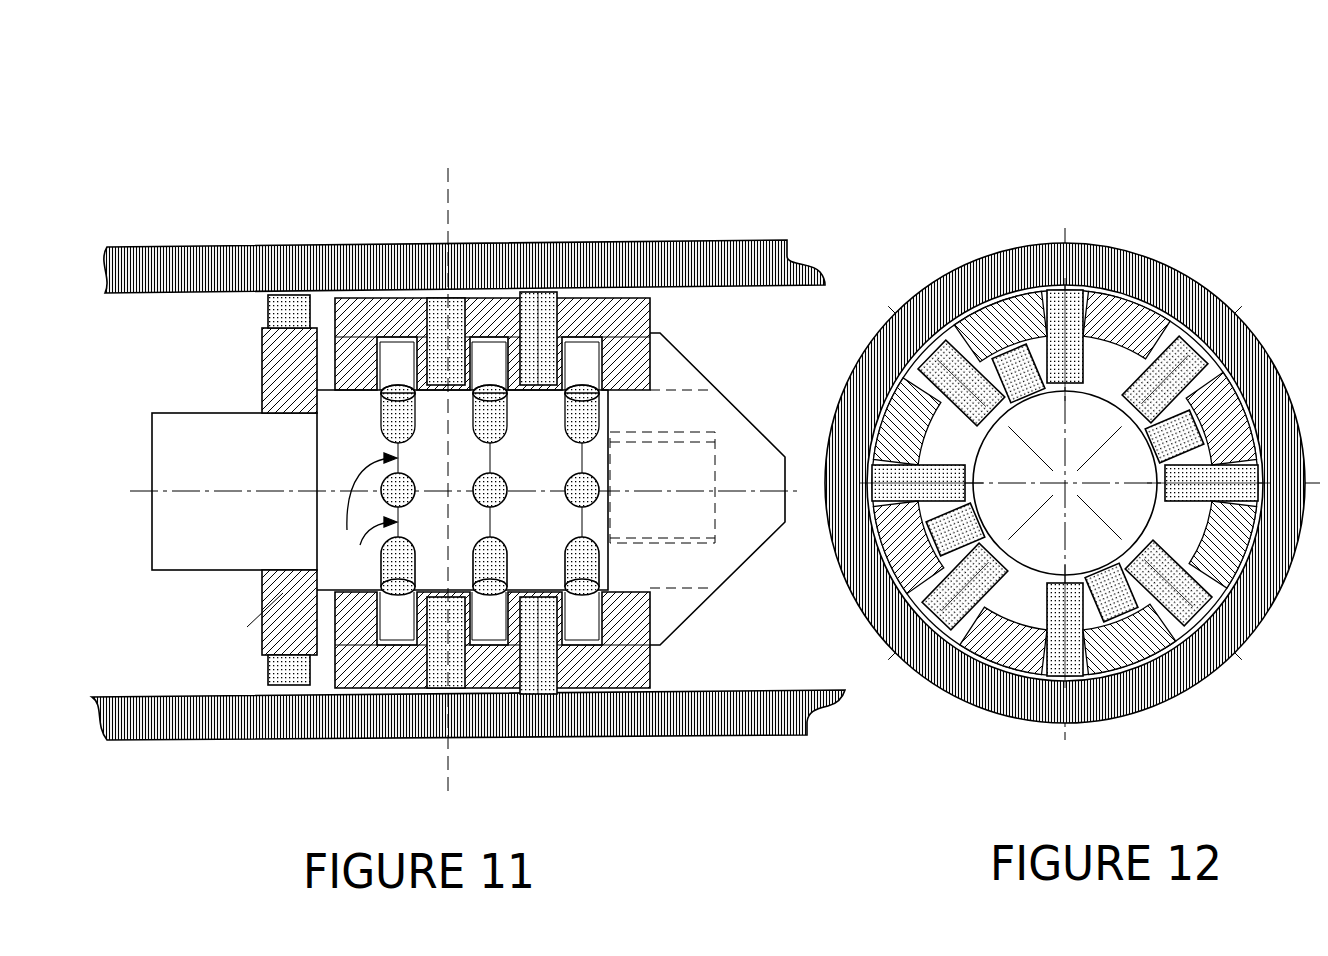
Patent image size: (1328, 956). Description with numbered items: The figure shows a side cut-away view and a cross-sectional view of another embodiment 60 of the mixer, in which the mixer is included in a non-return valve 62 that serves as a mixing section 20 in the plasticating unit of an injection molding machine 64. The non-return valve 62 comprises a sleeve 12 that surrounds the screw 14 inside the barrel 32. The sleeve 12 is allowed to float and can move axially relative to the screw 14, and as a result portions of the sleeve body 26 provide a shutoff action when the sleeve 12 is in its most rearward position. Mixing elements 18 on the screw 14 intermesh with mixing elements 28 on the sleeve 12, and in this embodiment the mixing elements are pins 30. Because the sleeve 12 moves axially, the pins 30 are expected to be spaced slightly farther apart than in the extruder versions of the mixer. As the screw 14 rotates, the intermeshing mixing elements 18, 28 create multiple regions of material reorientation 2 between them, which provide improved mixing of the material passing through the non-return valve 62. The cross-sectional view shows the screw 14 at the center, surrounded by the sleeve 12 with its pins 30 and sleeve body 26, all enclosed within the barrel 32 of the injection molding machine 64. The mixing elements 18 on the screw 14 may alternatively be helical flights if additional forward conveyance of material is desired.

In FIG. 11, the region of material reorientation 2 is at (368, 517).
In FIG. 11, the sleeve 12 is at (572, 468).
In FIG. 12, the sleeve 12 is at (1016, 483).
In FIG. 11, the screw 14 is at (212, 453).
In FIG. 12, the screw 14 is at (1078, 422).
In FIG. 11, the mixing elements 18 is at (597, 417).
In FIG. 12, the mixing elements 18 is at (937, 433).
In FIG. 11, the mixing section 20 is at (514, 390).
In FIG. 11, the sleeve body 26 is at (653, 673).
In FIG. 12, the sleeve body 26 is at (1016, 483).
In FIG. 11, the mixing elements 28 is at (548, 635).
In FIG. 12, the mixing elements 28 is at (930, 570).
In FIG. 11, the pins 30 is at (597, 493).
In FIG. 12, the pins 30 is at (1016, 483).
In FIG. 11, the barrel 32 is at (773, 261).
In FIG. 12, the barrel 32 is at (962, 287).
In FIG. 11, the embodiment of the mixer 60 is at (514, 390).
In FIG. 11, the non-return valve 62 is at (514, 390).
In FIG. 12, the injection molding machine 64 is at (1065, 481).